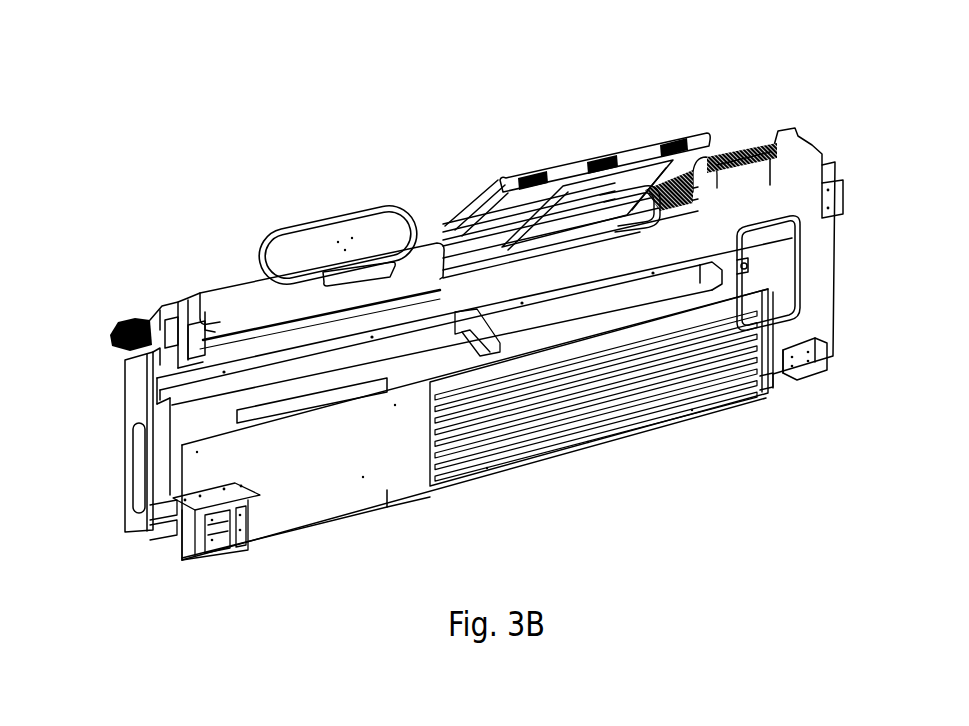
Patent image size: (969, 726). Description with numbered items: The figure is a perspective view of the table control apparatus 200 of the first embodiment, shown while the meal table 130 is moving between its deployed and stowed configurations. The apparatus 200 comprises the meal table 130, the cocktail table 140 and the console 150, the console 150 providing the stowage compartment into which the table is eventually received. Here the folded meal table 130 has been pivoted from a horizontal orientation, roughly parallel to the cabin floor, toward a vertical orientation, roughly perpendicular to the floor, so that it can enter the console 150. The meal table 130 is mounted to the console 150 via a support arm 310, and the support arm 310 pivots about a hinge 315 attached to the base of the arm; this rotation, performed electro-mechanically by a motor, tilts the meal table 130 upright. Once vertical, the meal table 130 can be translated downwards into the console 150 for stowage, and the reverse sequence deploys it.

The table control apparatus 200 is at (185, 165).
The meal table 130 is at (662, 148).
The cocktail table 140 is at (345, 236).
The console 150 is at (154, 320).
The support arm 310 is at (602, 199).
The hinge 315 is at (455, 256).